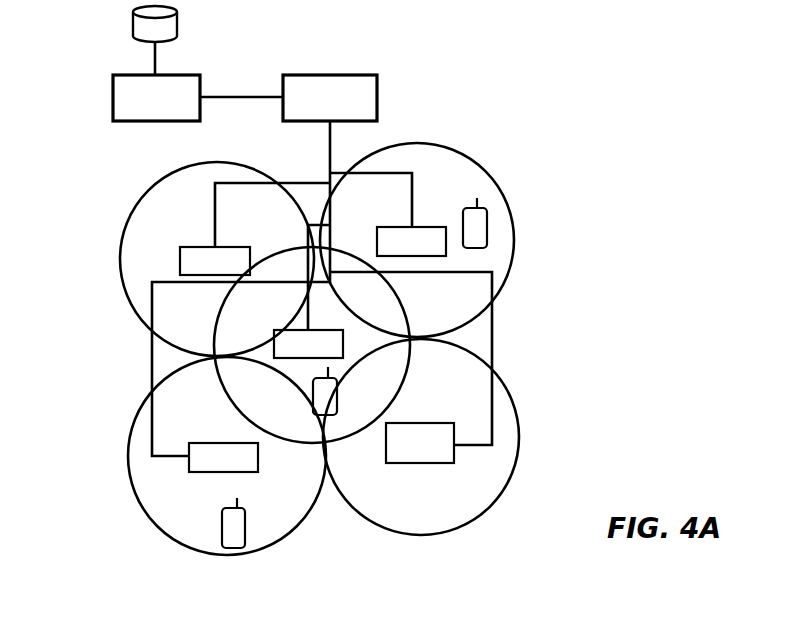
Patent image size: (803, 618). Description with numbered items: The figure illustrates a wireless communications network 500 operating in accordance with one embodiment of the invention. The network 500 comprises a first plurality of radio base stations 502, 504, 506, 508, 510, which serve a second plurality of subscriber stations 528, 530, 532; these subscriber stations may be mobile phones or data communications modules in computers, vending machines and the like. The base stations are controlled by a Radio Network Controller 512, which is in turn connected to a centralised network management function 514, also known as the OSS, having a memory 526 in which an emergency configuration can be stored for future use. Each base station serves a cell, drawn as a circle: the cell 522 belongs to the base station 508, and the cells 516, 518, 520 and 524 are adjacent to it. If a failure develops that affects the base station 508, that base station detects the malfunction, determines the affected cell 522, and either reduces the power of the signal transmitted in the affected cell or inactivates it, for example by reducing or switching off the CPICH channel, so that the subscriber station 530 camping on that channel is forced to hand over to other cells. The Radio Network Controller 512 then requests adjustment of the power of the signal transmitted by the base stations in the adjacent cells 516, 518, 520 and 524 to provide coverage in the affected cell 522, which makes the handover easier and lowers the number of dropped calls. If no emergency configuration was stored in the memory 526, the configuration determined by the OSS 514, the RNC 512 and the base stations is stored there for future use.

The wireless communications network 500 is at (679, 440).
The radio base station 502 is at (182, 252).
The radio base station 504 is at (200, 463).
The radio base station 506 is at (437, 455).
The radio base station 508 is at (332, 350).
The radio base station 510 is at (437, 237).
The Radio Network Controller 512 is at (362, 97).
The network management function 514 is at (127, 103).
The adjacent cell 516 is at (150, 253).
The adjacent cell 518 is at (168, 505).
The adjacent cell 520 is at (460, 512).
The affected cell 522 is at (367, 342).
The adjacent cell 524 is at (492, 257).
The memory 526 is at (165, 27).
The subscriber station 528 is at (230, 528).
The subscriber station 530 is at (325, 400).
The subscriber station 532 is at (482, 233).